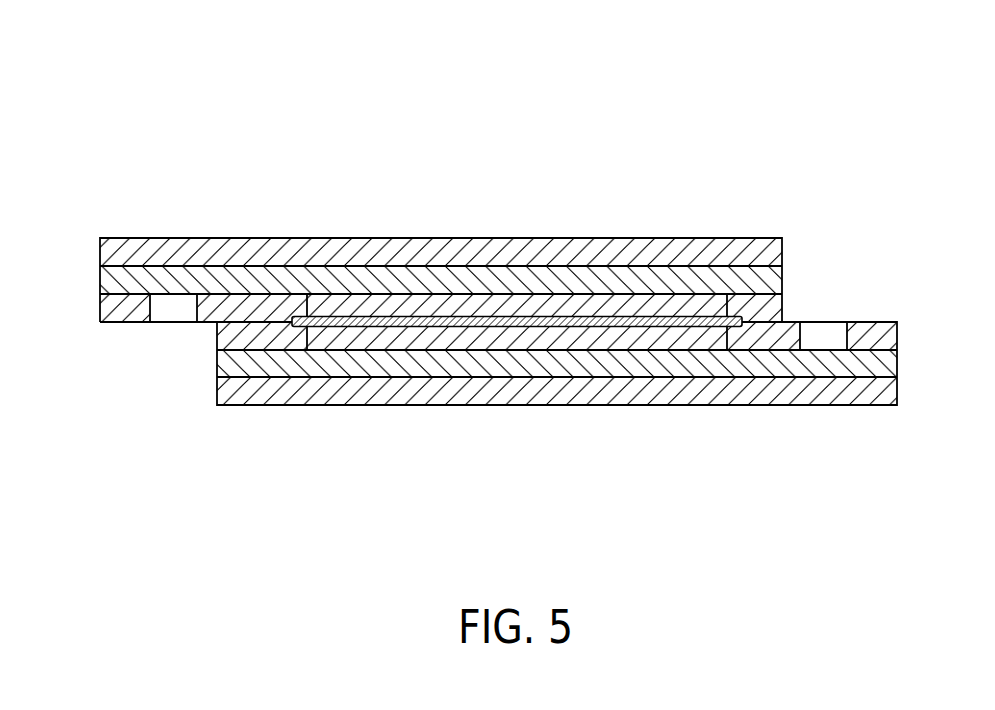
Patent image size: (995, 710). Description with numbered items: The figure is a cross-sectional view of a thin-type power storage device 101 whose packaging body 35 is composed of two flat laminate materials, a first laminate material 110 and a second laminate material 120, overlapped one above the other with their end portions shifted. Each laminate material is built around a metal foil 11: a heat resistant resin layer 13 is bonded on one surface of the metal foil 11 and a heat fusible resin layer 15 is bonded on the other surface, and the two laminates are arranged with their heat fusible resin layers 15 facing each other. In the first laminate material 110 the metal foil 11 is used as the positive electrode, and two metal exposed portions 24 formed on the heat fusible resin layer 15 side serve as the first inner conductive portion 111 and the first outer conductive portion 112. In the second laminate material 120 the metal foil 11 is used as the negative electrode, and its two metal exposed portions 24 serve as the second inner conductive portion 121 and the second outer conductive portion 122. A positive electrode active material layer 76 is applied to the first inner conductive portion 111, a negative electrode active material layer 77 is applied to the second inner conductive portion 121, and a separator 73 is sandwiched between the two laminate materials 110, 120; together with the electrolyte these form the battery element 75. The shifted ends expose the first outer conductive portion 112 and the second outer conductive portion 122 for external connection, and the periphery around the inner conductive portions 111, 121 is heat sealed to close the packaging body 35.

The power storage device 101 is at (499, 265).
The first laminate material 110 is at (764, 409).
The second laminate material 120 is at (499, 306).
The packaging body 35 is at (499, 326).
The heat resistant resin layer 13 is at (723, 248).
The metal foil 11 is at (758, 276).
The heat fusible resin layer 15 is at (499, 306).
The metal exposed portion 24 is at (499, 306).
The first inner conductive portion 111 is at (396, 345).
The first outer conductive portion 112 is at (825, 348).
The second inner conductive portion 121 is at (368, 299).
The second outer conductive portion 122 is at (173, 295).
The battery element 75 is at (517, 338).
The negative electrode active material layer 77 is at (493, 302).
The separator 73 is at (656, 329).
The positive electrode active material layer 76 is at (546, 328).